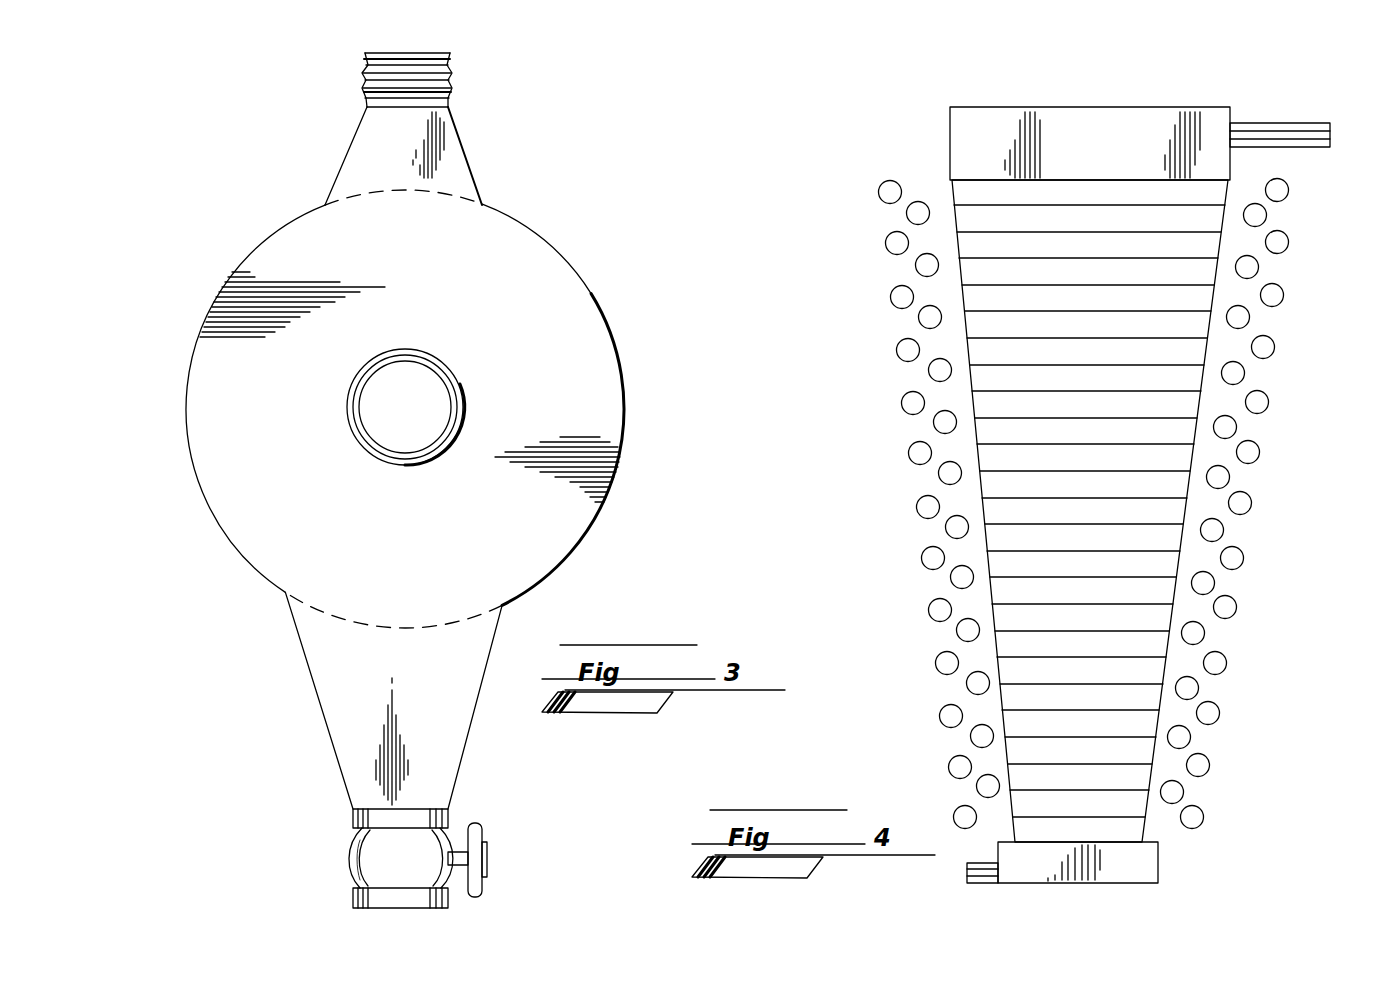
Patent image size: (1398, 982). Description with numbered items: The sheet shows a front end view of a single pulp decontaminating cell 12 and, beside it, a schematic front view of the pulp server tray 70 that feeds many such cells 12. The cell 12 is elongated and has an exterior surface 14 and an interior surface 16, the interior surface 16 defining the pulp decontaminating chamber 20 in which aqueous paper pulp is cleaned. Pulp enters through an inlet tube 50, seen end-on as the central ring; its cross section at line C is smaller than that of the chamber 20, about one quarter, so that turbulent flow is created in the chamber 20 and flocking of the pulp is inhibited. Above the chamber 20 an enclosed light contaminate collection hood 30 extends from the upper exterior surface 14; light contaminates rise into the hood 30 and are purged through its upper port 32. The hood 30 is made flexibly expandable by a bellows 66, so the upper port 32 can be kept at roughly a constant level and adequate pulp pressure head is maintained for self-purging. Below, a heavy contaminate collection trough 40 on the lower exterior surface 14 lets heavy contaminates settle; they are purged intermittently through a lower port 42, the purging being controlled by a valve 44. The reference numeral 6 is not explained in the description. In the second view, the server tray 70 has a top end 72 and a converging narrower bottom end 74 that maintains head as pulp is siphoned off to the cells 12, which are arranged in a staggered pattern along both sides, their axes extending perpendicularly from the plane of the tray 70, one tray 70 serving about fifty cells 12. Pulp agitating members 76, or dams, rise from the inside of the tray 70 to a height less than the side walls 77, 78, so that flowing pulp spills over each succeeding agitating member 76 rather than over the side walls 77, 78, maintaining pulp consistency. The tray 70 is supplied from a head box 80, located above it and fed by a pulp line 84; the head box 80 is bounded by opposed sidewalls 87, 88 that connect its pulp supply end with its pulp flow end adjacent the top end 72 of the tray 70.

In FIG. 3, the vessel housing 6 is at (599, 291).
In FIG. 3, the cell 12 is at (562, 251).
In FIG. 4, the cell 12 is at (883, 245).
In FIG. 3, the exterior surface 14 is at (234, 272).
In FIG. 3, the interior surface 16 is at (188, 410).
In FIG. 3, the pulp decontaminating chamber 20 is at (431, 277).
In FIG. 3, the light contaminate collection hood 30 is at (468, 148).
In FIG. 3, the upper port 32 is at (377, 53).
In FIG. 3, the heavy contaminate collection trough 40 is at (313, 687).
In FIG. 3, the lower port 42 is at (381, 810).
In FIG. 3, the valve 44 is at (483, 892).
In FIG. 3, the inlet tube 50 is at (464, 403).
In FIG. 3, the bellows 66 is at (453, 80).
In FIG. 3, the line c—c C is at (435, 346).
In FIG. 4, the pulp server tray 70 is at (1222, 335).
In FIG. 4, the top end 72 is at (1033, 180).
In FIG. 4, the bottom end 74 is at (1110, 884).
In FIG. 4, the pulp agitating members 76 is at (990, 312).
In FIG. 4, the side wall 77 is at (983, 535).
In FIG. 4, the side wall 78 is at (1183, 548).
In FIG. 4, the head box 80 is at (1110, 155).
In FIG. 4, the pulp line 84 is at (1288, 132).
In FIG. 4, the sidewall 87 is at (950, 124).
In FIG. 4, the sidewall 88 is at (1243, 119).